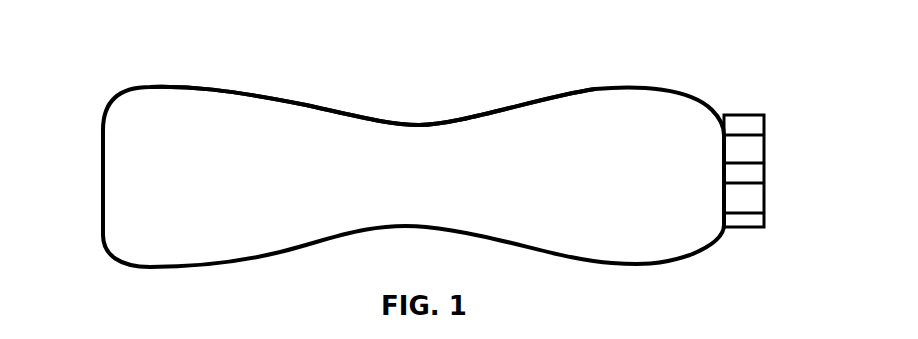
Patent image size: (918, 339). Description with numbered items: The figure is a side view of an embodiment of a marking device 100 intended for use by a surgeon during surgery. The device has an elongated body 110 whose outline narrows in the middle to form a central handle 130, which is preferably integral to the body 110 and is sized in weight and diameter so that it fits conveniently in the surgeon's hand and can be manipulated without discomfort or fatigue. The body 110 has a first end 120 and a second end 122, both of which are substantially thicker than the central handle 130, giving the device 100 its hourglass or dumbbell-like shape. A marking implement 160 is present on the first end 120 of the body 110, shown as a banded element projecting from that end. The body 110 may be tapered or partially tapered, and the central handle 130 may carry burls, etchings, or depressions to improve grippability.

The marking device 100 is at (110, 42).
The body 110 is at (272, 92).
The first end 120 is at (720, 233).
The second end 122 is at (95, 205).
The central handle 130 is at (419, 118).
The marking implement 160 is at (770, 183).